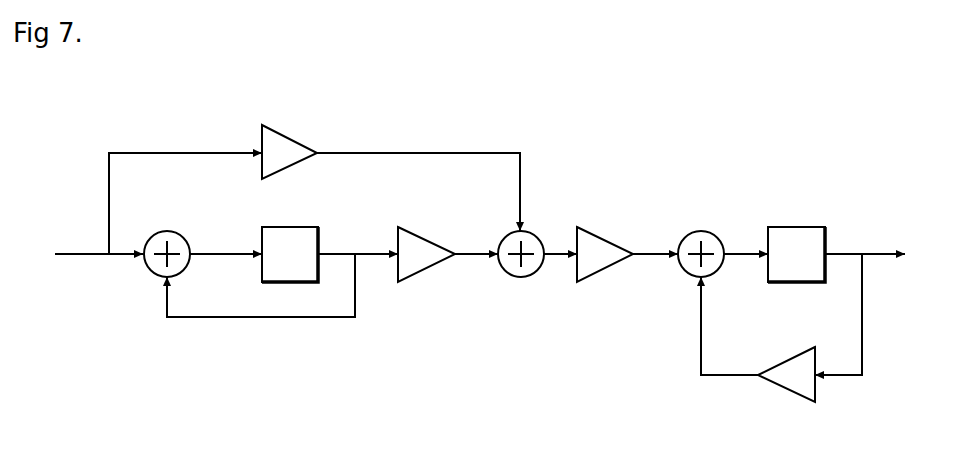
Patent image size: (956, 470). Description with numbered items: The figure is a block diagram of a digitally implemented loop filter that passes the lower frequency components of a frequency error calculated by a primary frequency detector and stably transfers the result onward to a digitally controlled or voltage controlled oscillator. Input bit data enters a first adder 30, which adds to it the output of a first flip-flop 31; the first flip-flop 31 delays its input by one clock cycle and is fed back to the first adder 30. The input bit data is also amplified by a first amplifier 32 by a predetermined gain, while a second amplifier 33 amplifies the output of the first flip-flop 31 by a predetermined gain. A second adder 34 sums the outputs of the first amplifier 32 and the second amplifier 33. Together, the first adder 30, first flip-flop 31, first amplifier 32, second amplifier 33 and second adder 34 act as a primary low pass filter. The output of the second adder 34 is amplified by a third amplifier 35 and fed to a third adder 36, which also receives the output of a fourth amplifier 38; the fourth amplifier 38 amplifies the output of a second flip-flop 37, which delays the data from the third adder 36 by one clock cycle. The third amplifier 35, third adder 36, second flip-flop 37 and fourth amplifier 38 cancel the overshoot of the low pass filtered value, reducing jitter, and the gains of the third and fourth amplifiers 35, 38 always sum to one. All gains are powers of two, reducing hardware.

The first adder 30 is at (151, 269).
The first flip-flop 31 is at (292, 234).
The first amplifier 32 is at (420, 272).
The second amplifier 33 is at (288, 144).
The second adder 34 is at (521, 278).
The third amplifier 35 is at (602, 244).
The third adder 36 is at (702, 234).
The second flip-flop 37 is at (798, 234).
The fourth amplifier 38 is at (791, 390).